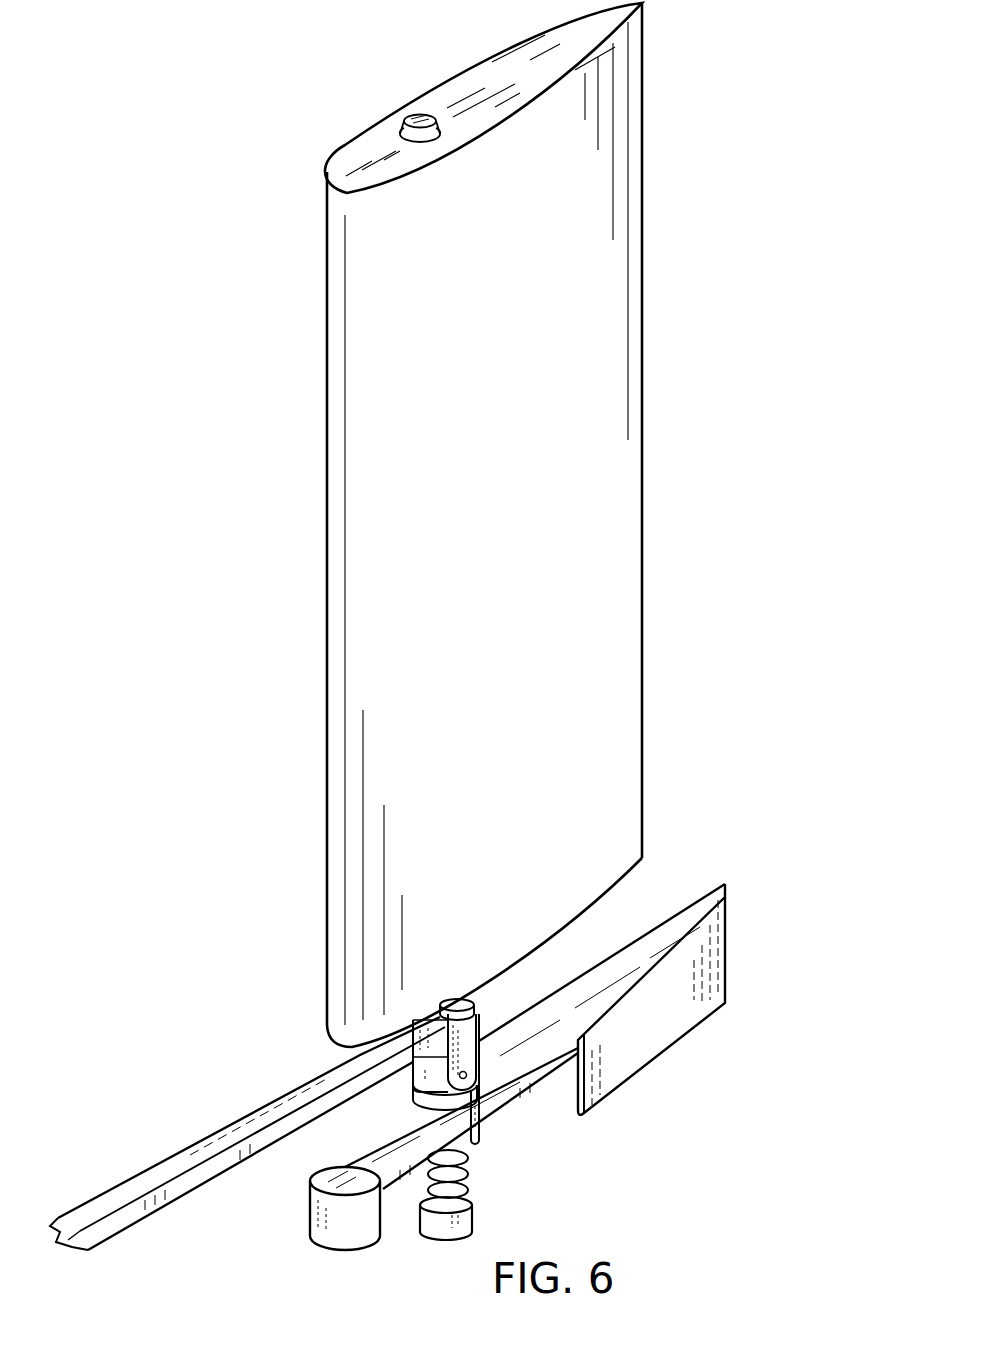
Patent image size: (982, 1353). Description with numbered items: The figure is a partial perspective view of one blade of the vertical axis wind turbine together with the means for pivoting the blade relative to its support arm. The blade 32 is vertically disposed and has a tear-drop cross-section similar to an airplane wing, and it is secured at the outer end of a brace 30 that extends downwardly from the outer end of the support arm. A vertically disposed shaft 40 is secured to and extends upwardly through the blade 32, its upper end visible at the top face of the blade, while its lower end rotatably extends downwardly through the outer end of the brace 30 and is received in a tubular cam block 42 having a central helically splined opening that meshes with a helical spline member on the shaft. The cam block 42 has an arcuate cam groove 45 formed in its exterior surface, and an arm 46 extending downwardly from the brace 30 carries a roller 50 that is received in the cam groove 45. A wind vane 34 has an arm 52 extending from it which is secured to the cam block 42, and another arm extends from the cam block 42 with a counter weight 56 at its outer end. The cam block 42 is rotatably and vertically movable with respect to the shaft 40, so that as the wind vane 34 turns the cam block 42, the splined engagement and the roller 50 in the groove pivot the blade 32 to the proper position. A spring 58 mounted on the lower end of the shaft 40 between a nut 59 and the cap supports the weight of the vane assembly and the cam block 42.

The brace 30 is at (240, 1127).
The blade 32 is at (660, 162).
The wind vane 34 is at (703, 982).
The shaft 40 is at (408, 116).
The cam block 42 is at (480, 1003).
The cam groove 45 is at (413, 1090).
The arm 46 is at (602, 970).
The roller 50 is at (466, 1078).
The arm 52 is at (517, 1057).
The counter weight 56 is at (320, 1221).
The spring 58 is at (470, 1182).
The nut 59 is at (462, 1222).